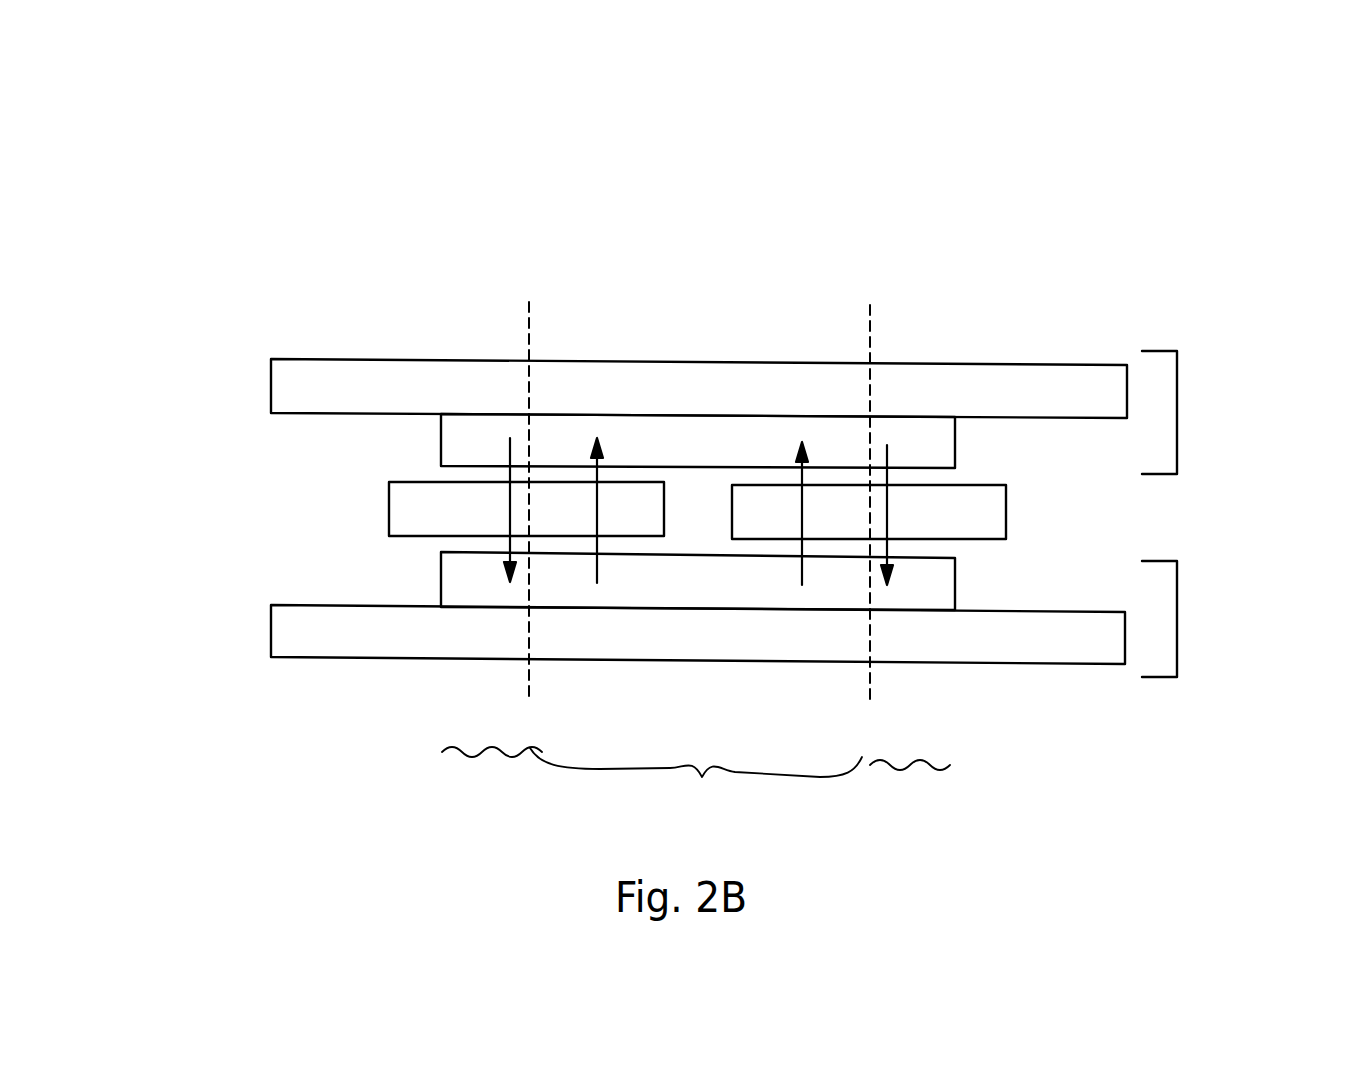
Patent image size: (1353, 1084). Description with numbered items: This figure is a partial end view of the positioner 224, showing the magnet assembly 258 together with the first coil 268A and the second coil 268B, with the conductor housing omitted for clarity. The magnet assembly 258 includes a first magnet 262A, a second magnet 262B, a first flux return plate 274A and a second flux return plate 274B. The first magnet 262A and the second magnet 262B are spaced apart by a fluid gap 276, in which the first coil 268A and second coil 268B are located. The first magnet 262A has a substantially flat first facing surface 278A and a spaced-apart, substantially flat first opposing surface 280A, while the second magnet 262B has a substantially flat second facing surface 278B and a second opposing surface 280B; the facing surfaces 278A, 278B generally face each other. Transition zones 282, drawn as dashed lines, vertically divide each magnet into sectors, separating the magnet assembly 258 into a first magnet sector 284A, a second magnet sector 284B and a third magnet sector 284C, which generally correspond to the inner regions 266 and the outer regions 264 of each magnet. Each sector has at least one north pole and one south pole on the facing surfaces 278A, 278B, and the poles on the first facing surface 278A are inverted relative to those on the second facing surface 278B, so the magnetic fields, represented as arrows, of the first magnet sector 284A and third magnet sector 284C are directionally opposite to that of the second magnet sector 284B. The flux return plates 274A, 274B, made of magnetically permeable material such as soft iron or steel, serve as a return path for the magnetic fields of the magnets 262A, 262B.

The positioner 224 is at (1210, 196).
The magnet assembly 258 is at (1177, 420).
The first magnet 262A is at (440, 583).
The second magnet 262B is at (440, 437).
The outer regions 264 is at (441, 420).
The inner regions 266 is at (573, 428).
The first coil 268A is at (389, 504).
The second coil 268B is at (1006, 525).
The first flux return plate 274A is at (282, 628).
The second flux return plate 274B is at (287, 383).
The fluid gap 276 is at (992, 473).
The first facing surface 278A is at (743, 558).
The second facing surface 278B is at (838, 468).
The first opposing surface 280A is at (688, 612).
The second opposing surface 280B is at (782, 414).
The transition zones 282 is at (529, 330).
The first magnet sector 284A is at (492, 778).
The second magnet sector 284B is at (696, 779).
The third magnet sector 284C is at (910, 788).